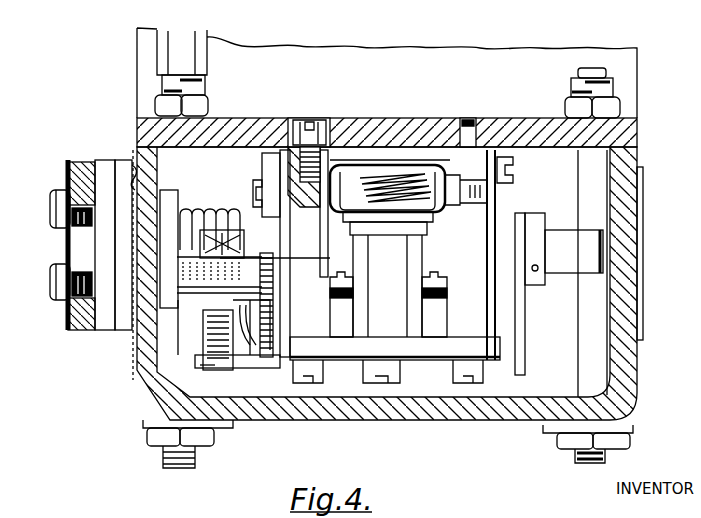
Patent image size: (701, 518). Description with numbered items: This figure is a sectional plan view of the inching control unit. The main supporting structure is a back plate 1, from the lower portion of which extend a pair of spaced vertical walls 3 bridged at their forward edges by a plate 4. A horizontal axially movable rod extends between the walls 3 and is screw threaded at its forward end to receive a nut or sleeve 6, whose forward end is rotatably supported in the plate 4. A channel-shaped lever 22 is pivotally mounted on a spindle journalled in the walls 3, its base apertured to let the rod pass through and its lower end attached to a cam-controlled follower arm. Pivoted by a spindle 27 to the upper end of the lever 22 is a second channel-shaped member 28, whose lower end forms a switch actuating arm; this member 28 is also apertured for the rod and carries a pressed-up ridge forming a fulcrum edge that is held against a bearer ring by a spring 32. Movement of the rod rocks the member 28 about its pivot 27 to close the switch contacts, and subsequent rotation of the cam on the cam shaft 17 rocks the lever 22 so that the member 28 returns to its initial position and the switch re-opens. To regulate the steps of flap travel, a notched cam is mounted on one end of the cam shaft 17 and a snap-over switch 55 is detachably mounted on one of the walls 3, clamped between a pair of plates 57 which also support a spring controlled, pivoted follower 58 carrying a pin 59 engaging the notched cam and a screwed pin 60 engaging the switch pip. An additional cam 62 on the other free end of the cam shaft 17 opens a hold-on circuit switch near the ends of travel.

The back plate 1 is at (514, 132).
The spaced vertical walls 3 is at (315, 253).
The plate 4 is at (345, 350).
The nut or sleeve 6 is at (377, 338).
The cam shaft 17 is at (575, 262).
The channel-shaped lever 22 is at (408, 157).
The spindle 27 is at (440, 195).
The second channel-shaped member 28 is at (330, 153).
The spring 32 is at (395, 185).
The snap-over switch 55 is at (205, 275).
The pair of plates 57 is at (175, 308).
The spring controlled pivoted follower 58 is at (200, 362).
The pin 59 is at (257, 365).
The screwed pin 60 is at (220, 375).
The additional cam 62 is at (524, 353).